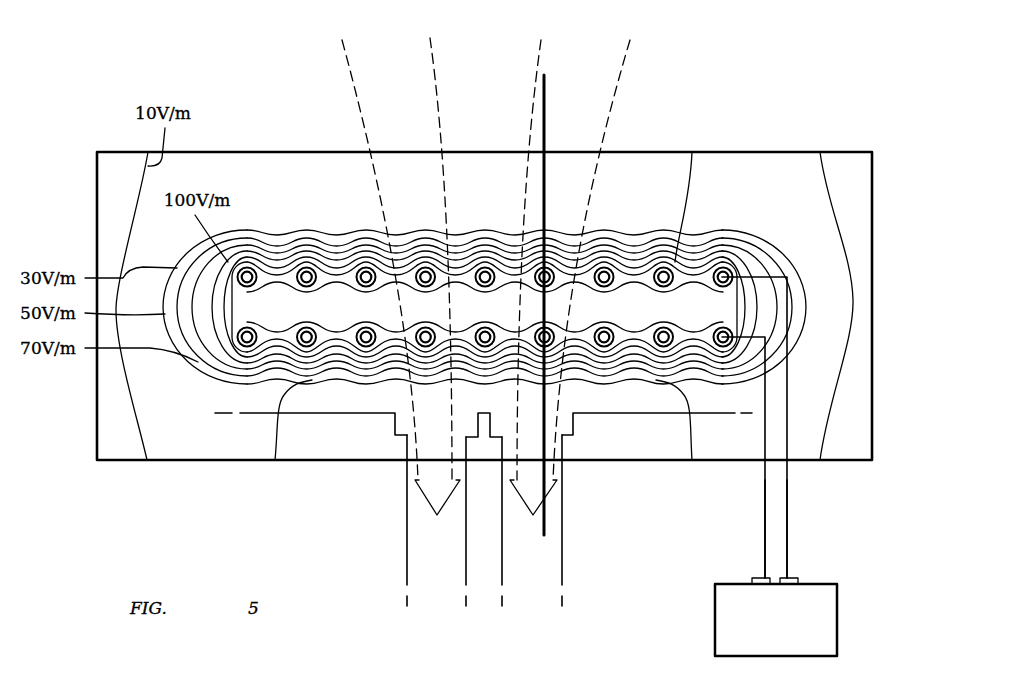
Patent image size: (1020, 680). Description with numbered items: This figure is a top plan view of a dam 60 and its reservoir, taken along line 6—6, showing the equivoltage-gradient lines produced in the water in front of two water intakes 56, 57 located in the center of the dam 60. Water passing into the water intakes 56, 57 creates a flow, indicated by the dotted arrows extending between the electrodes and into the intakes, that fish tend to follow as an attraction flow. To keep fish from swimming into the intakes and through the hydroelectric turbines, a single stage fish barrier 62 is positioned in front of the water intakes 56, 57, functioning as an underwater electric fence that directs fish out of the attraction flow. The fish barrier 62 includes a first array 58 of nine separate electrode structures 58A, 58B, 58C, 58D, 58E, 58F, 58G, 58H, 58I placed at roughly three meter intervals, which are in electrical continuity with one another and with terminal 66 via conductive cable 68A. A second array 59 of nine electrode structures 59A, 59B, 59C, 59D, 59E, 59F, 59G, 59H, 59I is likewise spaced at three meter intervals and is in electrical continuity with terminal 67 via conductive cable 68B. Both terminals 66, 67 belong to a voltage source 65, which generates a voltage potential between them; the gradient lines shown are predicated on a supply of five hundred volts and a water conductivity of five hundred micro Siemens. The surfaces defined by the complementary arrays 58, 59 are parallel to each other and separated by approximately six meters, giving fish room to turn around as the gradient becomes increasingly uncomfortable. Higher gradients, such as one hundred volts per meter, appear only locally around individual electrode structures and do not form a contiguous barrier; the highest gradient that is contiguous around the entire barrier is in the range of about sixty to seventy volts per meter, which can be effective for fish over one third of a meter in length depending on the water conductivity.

The single stage fish barrier 62 is at (86, 138).
The second array 59 is at (430, 344).
The first array 58 is at (409, 436).
The electrode structure 59A is at (248, 262).
The electrode structure 59B is at (306, 262).
The electrode structure 59C is at (360, 262).
The electrode structure 59D is at (436, 262).
The electrode structure 59E is at (499, 262).
The electrode structure 59F is at (554, 262).
The electrode structure 59G is at (613, 262).
The electrode structure 59H is at (677, 262).
The electrode structure 59I is at (722, 262).
The electrode structure 58A is at (252, 352).
The electrode structure 58B is at (312, 352).
The electrode structure 58C is at (374, 352).
The electrode structure 58D is at (412, 324).
The electrode structure 58E is at (494, 324).
The electrode structure 58F is at (558, 324).
The electrode structure 58G is at (608, 352).
The electrode structure 58H is at (674, 352).
The electrode structure 58I is at (730, 352).
The dam 60 is at (336, 447).
The water intake 57 is at (442, 527).
The water intake 56 is at (529, 527).
The line 6— 6 is at (546, 88).
The conductive cable 68A is at (763, 530).
The conductive cable 68B is at (790, 530).
The terminal 66 is at (757, 578).
The terminal 67 is at (795, 578).
The voltage source 65 is at (718, 615).